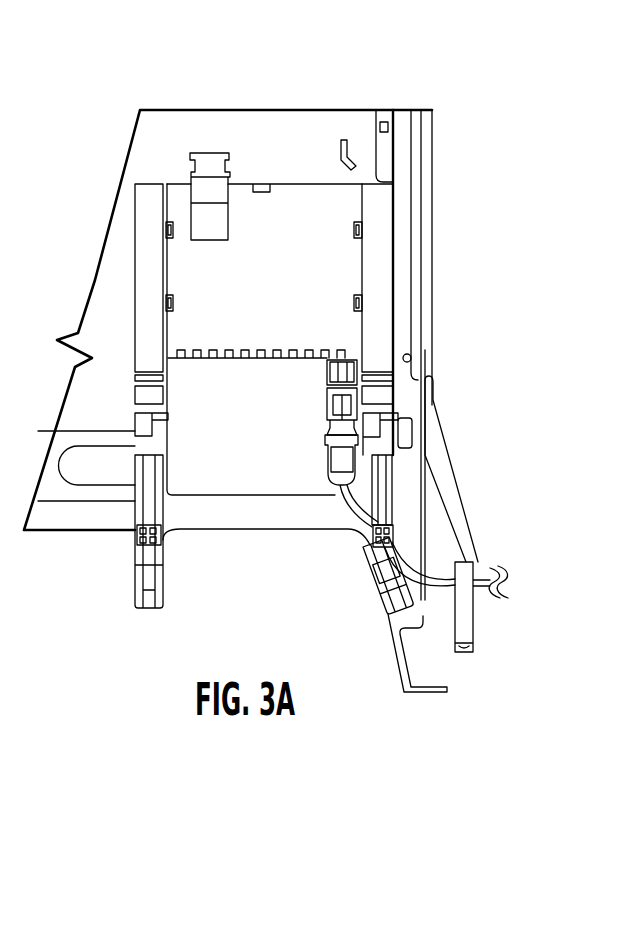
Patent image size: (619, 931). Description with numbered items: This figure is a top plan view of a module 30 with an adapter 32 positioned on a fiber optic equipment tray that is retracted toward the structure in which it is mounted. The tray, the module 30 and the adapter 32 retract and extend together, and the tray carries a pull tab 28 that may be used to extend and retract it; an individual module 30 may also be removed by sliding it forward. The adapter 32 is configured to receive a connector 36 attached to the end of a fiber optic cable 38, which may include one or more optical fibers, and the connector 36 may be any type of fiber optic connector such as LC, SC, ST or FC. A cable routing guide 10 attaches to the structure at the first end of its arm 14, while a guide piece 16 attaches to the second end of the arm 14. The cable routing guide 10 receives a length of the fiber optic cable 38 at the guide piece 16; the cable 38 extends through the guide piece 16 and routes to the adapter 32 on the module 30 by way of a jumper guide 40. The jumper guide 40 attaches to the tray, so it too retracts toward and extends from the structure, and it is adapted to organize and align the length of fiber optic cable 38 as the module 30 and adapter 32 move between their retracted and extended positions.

The cable routing guide 10 is at (447, 467).
The arm 14 is at (437, 421).
The guide piece 16 is at (475, 634).
The pull tab 28 is at (136, 554).
The module 30 is at (366, 250).
The adapter 32 is at (327, 404).
The connector 36 is at (328, 466).
The fiber optic cable 38 is at (434, 568).
The jumper guide 40 is at (395, 526).